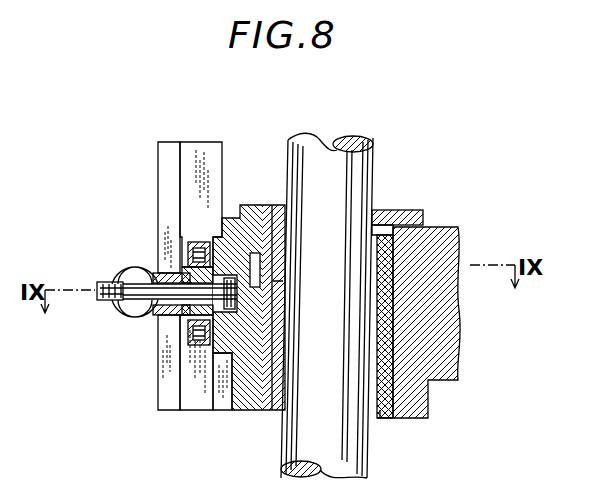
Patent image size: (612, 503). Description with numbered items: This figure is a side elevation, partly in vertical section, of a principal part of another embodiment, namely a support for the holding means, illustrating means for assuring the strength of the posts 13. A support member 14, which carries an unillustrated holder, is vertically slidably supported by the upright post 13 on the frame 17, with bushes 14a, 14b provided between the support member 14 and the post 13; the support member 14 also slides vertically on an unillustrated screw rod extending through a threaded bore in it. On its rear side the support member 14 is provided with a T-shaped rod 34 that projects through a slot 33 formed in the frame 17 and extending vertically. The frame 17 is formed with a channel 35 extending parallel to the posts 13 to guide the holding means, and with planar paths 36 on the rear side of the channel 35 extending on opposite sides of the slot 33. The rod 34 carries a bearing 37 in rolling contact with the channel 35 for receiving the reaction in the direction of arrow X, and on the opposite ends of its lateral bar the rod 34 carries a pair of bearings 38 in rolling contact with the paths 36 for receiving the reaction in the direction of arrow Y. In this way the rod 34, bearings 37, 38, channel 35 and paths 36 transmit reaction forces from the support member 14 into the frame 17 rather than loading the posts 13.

The post 13 is at (365, 172).
The support member 14 is at (445, 226).
The bush 14a is at (381, 414).
The bush 14b is at (285, 288).
The frame 17 is at (160, 390).
The slot 33 is at (170, 165).
The T-shaped rod 34 is at (128, 280).
The channel 35 is at (197, 410).
The planar path 36 is at (158, 350).
The bearing 37 is at (193, 243).
The bearing 38 is at (122, 315).